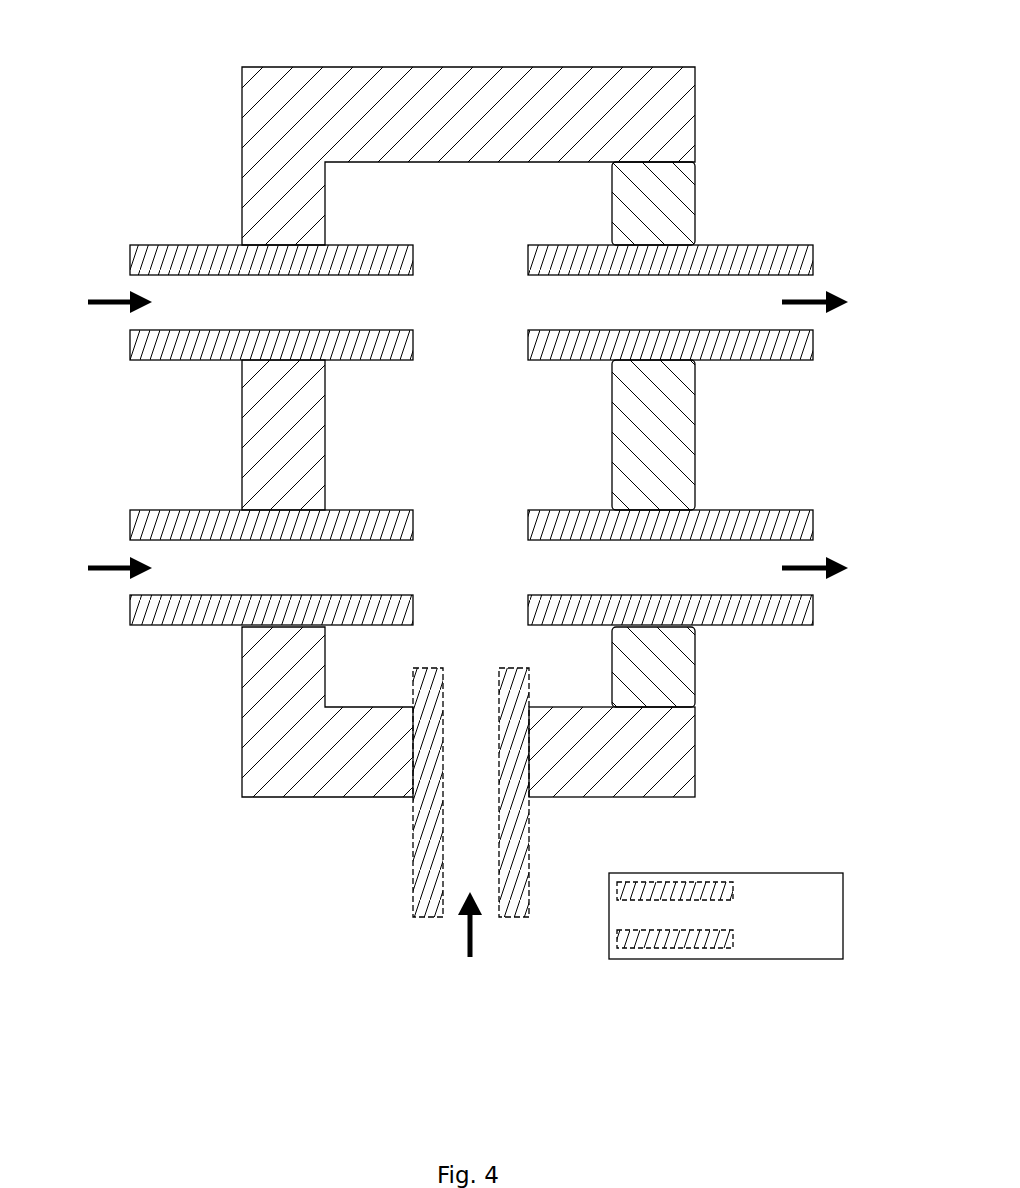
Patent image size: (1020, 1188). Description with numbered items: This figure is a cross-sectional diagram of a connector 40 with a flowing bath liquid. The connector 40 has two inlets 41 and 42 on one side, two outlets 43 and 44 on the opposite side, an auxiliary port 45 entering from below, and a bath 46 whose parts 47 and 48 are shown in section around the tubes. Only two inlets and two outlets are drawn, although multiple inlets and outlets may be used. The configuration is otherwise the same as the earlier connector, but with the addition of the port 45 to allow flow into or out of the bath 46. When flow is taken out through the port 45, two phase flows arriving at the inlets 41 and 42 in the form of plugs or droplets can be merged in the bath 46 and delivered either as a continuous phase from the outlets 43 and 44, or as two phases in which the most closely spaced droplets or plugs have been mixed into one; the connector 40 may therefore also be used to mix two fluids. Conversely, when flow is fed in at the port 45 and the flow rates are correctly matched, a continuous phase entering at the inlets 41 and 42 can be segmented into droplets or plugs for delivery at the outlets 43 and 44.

The connector 40 is at (143, 103).
The inlet 41 is at (190, 243).
The inlet 42 is at (183, 510).
The outlet 43 is at (757, 243).
The outlet 44 is at (760, 510).
The auxiliary port 45 is at (412, 857).
The bath 46 is at (715, 117).
The part of the bath 47 is at (690, 665).
The part of the bath 48 is at (240, 693).